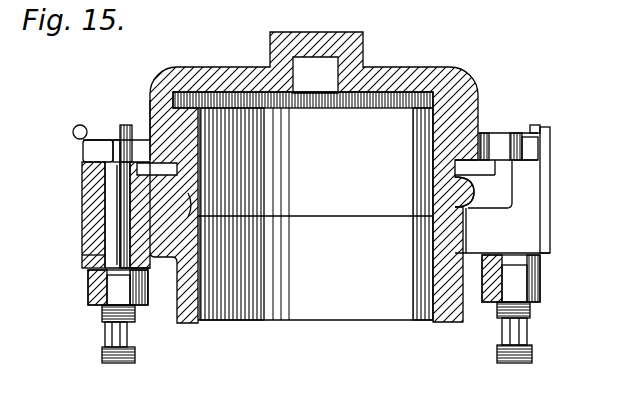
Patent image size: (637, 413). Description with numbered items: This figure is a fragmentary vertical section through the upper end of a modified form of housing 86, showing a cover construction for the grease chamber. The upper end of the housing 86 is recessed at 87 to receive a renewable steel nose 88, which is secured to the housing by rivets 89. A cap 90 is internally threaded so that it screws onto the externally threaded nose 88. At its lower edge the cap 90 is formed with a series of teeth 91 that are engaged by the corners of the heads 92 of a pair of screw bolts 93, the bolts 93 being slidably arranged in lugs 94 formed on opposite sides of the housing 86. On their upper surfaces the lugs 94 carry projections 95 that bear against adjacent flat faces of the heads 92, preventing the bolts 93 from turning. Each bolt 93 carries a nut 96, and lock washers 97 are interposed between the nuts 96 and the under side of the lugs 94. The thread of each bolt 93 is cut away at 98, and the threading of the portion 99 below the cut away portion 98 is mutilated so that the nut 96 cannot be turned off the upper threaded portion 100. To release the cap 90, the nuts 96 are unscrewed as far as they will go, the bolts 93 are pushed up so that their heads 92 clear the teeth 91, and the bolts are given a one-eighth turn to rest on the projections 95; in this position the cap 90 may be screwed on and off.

The housing 86 is at (178, 240).
The recess 87 is at (210, 192).
The renewable steel nose 88 is at (425, 124).
The rivets 89 is at (450, 184).
The cap 90 is at (424, 70).
The teeth 91 is at (150, 134).
The heads 92 is at (123, 140).
The screw bolts 93 is at (110, 215).
The lugs 94 is at (88, 188).
The projections 95 is at (82, 120).
The nut 96 is at (102, 288).
The lock washers 97 is at (90, 274).
The cut away portion 98 is at (110, 333).
The mutilated threaded portion 99 is at (105, 353).
The upper threaded portion 100 is at (103, 311).